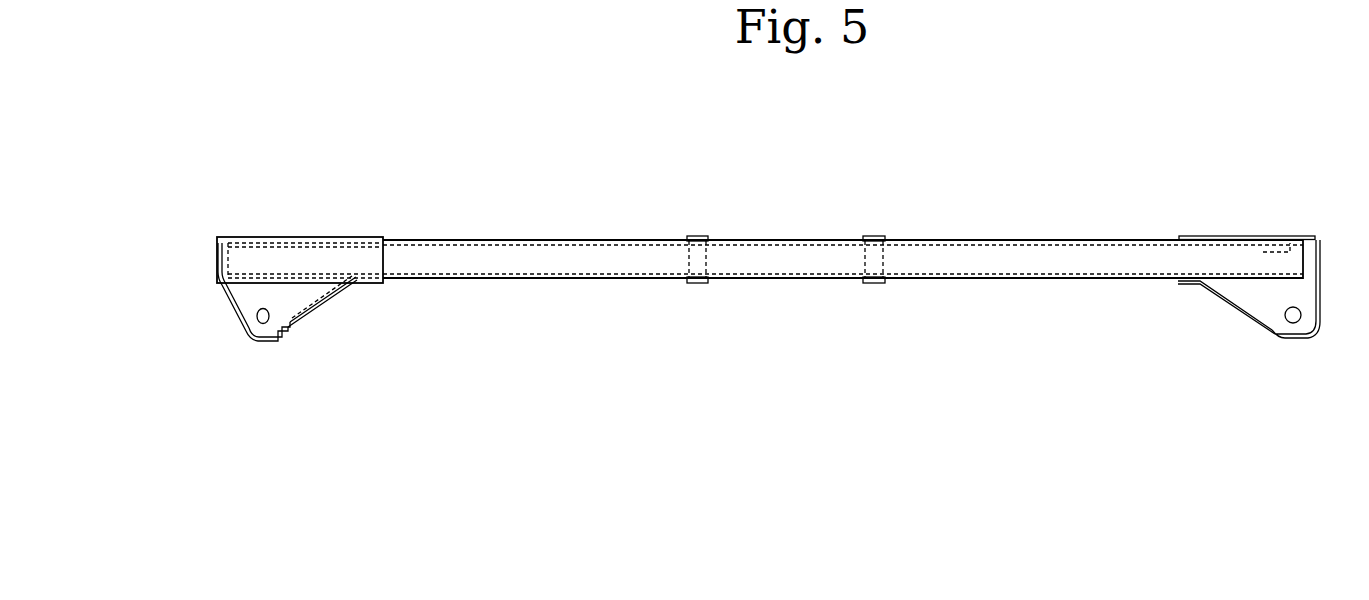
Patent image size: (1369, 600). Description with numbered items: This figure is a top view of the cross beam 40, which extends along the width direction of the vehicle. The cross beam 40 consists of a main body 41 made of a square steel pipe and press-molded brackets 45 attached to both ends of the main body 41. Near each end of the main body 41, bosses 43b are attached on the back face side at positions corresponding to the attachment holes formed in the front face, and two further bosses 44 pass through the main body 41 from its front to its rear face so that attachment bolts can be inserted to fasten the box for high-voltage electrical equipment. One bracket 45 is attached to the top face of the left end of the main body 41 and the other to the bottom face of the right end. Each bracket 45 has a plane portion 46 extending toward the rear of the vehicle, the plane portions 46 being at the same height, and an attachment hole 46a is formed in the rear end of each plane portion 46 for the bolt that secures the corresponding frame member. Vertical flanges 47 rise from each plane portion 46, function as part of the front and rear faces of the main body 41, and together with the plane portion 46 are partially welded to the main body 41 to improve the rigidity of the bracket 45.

The cross beam 40 is at (1053, 222).
The main body 41 is at (978, 234).
The boss 43b is at (268, 250).
The boss 44 is at (696, 235).
The bracket 45 is at (216, 305).
The plane portion 46 is at (252, 307).
The attachment hole 46a is at (262, 325).
The vertical flange 47 is at (217, 258).